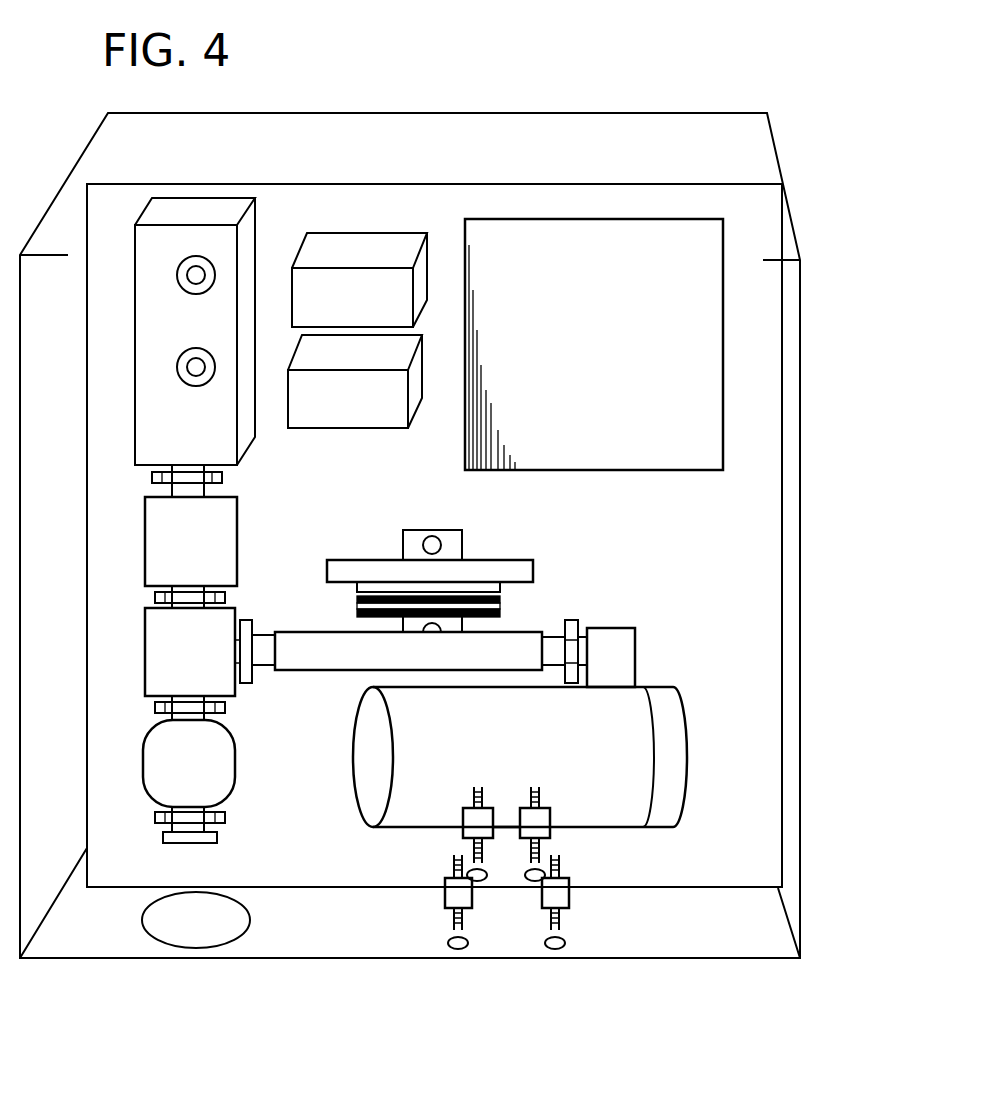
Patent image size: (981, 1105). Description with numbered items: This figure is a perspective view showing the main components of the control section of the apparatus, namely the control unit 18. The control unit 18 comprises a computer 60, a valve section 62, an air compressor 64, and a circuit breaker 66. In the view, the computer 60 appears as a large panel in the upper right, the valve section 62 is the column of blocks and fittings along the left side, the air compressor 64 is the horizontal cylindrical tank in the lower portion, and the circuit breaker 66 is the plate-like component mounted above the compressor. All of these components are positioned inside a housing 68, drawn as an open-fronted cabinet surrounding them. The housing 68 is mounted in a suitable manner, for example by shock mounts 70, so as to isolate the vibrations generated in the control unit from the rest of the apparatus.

The control unit 18 is at (582, 104).
The computer 60 is at (652, 455).
The valve section 62 is at (255, 535).
The air compressor 64 is at (373, 733).
The circuit breaker 66 is at (497, 567).
The housing 68 is at (790, 430).
The shock mounts 70 is at (445, 897).